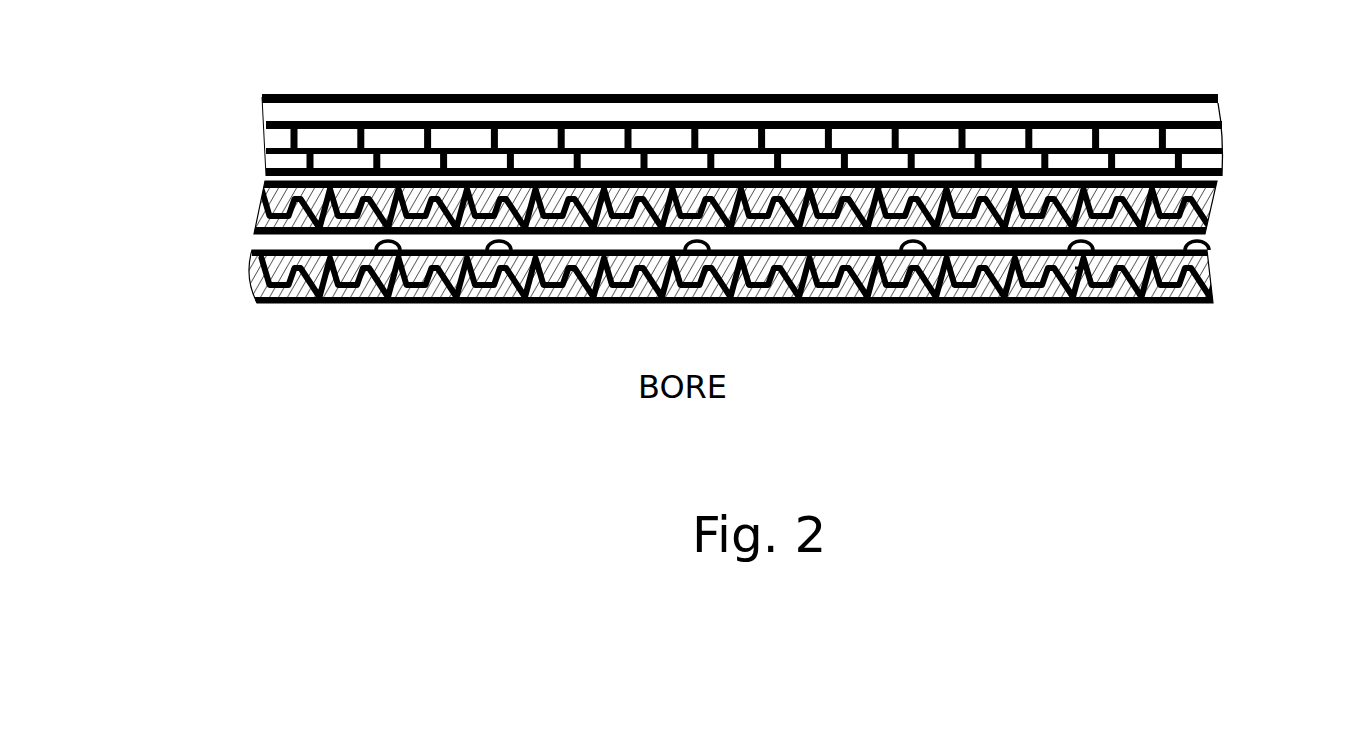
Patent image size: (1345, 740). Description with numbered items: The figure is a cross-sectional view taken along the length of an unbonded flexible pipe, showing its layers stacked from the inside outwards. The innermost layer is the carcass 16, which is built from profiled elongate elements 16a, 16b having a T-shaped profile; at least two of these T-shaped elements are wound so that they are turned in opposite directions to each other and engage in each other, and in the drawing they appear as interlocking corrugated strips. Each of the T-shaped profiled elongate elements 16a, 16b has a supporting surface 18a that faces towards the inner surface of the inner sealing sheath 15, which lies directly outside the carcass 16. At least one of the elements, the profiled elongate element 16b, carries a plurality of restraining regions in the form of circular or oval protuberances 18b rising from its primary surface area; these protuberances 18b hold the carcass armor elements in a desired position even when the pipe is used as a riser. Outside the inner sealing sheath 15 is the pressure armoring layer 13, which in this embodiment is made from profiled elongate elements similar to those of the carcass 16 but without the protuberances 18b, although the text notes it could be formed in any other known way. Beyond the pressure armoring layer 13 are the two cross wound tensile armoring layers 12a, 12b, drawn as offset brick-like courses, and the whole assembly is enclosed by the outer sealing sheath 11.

The outer sealing sheath 11 is at (392, 114).
The tensile armoring layer 12a is at (264, 158).
The tensile armoring layer 12b is at (262, 131).
The pressure armoring layer 13 is at (1212, 212).
The inner sealing sheath 15 is at (265, 242).
The carcass 16 is at (776, 342).
The profiled elongate element 16a is at (460, 292).
The profiled elongate element 16b is at (391, 270).
The supporting surface 18a is at (1204, 240).
The protuberances 18b is at (1076, 264).